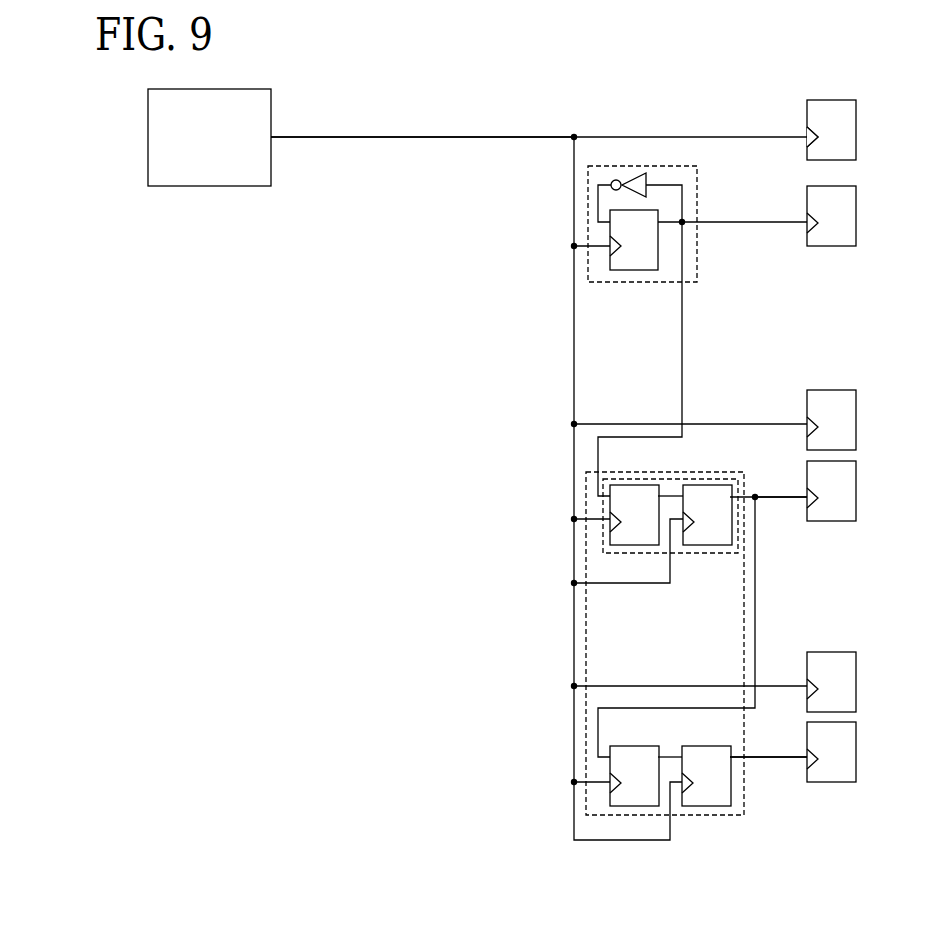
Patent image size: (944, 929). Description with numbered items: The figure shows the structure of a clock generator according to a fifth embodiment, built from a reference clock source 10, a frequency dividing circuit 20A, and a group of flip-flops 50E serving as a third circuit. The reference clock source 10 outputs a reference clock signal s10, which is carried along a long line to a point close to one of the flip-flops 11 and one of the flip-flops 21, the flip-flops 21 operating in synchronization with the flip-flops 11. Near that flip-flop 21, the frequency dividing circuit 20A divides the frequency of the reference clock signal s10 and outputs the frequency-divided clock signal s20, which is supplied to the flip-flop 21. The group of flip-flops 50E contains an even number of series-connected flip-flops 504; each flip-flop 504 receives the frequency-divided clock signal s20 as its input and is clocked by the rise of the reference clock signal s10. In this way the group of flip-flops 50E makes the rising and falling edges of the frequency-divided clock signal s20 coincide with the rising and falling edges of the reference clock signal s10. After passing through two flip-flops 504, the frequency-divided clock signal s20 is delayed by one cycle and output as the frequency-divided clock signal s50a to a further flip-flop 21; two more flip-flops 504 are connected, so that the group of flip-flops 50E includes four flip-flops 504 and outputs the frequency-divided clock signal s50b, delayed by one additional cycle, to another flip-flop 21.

The reference clock source 10 is at (271, 106).
The reference clock signal s10 is at (455, 135).
The flip-flops 11 is at (856, 130).
The flip-flops 21 is at (856, 215).
The frequency dividing circuit 20A is at (616, 282).
The frequency-divided clock signal s20 is at (738, 222).
The group of flip-flops 50E is at (603, 545).
The flip-flops 504 is at (653, 544).
The frequency-divided clock signal s50a is at (778, 497).
The frequency-divided clock signal s50b is at (778, 757).